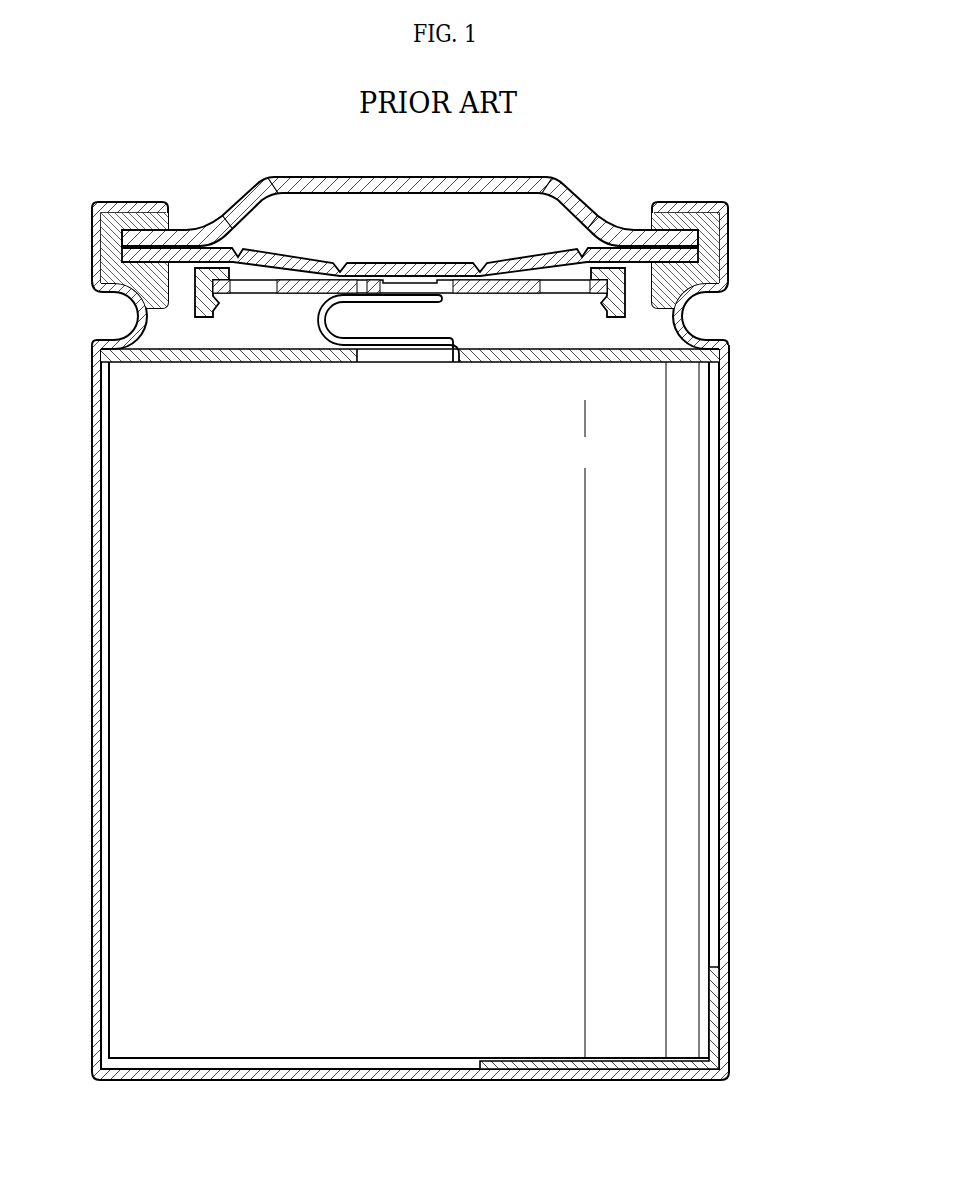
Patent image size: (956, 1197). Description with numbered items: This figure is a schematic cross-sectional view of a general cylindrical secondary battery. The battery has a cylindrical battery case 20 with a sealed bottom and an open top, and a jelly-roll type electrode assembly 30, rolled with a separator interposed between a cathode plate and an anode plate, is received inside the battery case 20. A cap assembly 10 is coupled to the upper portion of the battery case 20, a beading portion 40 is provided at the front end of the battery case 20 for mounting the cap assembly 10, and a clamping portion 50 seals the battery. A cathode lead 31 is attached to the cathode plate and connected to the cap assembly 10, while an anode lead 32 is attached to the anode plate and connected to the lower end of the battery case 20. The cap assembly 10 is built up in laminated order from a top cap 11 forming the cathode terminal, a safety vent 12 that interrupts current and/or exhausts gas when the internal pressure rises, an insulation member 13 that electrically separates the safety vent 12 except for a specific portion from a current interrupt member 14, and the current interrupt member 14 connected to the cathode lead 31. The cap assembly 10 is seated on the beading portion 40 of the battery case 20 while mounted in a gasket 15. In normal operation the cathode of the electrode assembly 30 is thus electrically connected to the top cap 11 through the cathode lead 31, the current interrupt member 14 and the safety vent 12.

The cap assembly 10 is at (466, 247).
The top cap 11 is at (707, 240).
The safety vent 12 is at (695, 257).
The insulation member 13 is at (620, 292).
The current interrupt member 14 is at (612, 312).
The gasket 15 is at (703, 275).
The battery case 20 is at (727, 492).
The electrode assembly 30 is at (692, 438).
The cathode lead 31 is at (318, 319).
The anode lead 32 is at (716, 993).
The beading portion 40 is at (148, 313).
The clamping portion 50 is at (146, 193).